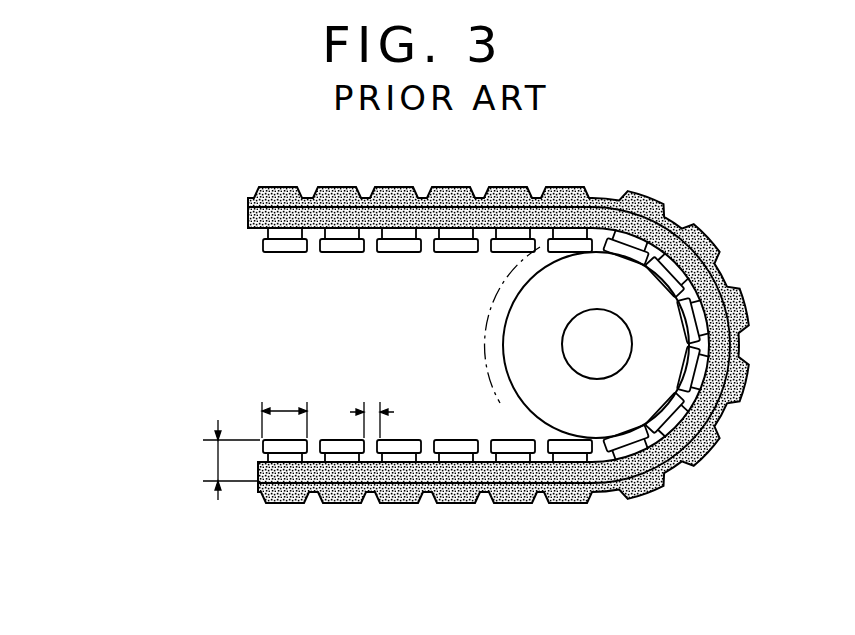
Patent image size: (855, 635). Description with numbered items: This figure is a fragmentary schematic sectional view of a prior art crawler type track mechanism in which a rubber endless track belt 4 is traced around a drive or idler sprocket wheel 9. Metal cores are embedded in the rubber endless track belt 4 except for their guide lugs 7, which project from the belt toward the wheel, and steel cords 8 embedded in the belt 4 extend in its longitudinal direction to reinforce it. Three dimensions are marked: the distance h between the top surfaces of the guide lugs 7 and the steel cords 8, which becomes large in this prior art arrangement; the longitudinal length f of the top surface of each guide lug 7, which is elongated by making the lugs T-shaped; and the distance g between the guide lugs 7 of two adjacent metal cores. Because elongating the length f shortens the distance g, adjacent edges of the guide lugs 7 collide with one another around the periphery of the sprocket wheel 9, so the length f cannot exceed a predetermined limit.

The rubber endless track belt 4 is at (336, 187).
The guide lug 7 is at (337, 440).
The steel cords 8 is at (507, 504).
The pulley 9 is at (518, 330).
The longitudinal length of the top surface of the guide lug f is at (284, 410).
The distance between adjacent guide lugs g is at (372, 410).
The distance between guide lug top surfaces and steel cords h is at (231, 460).